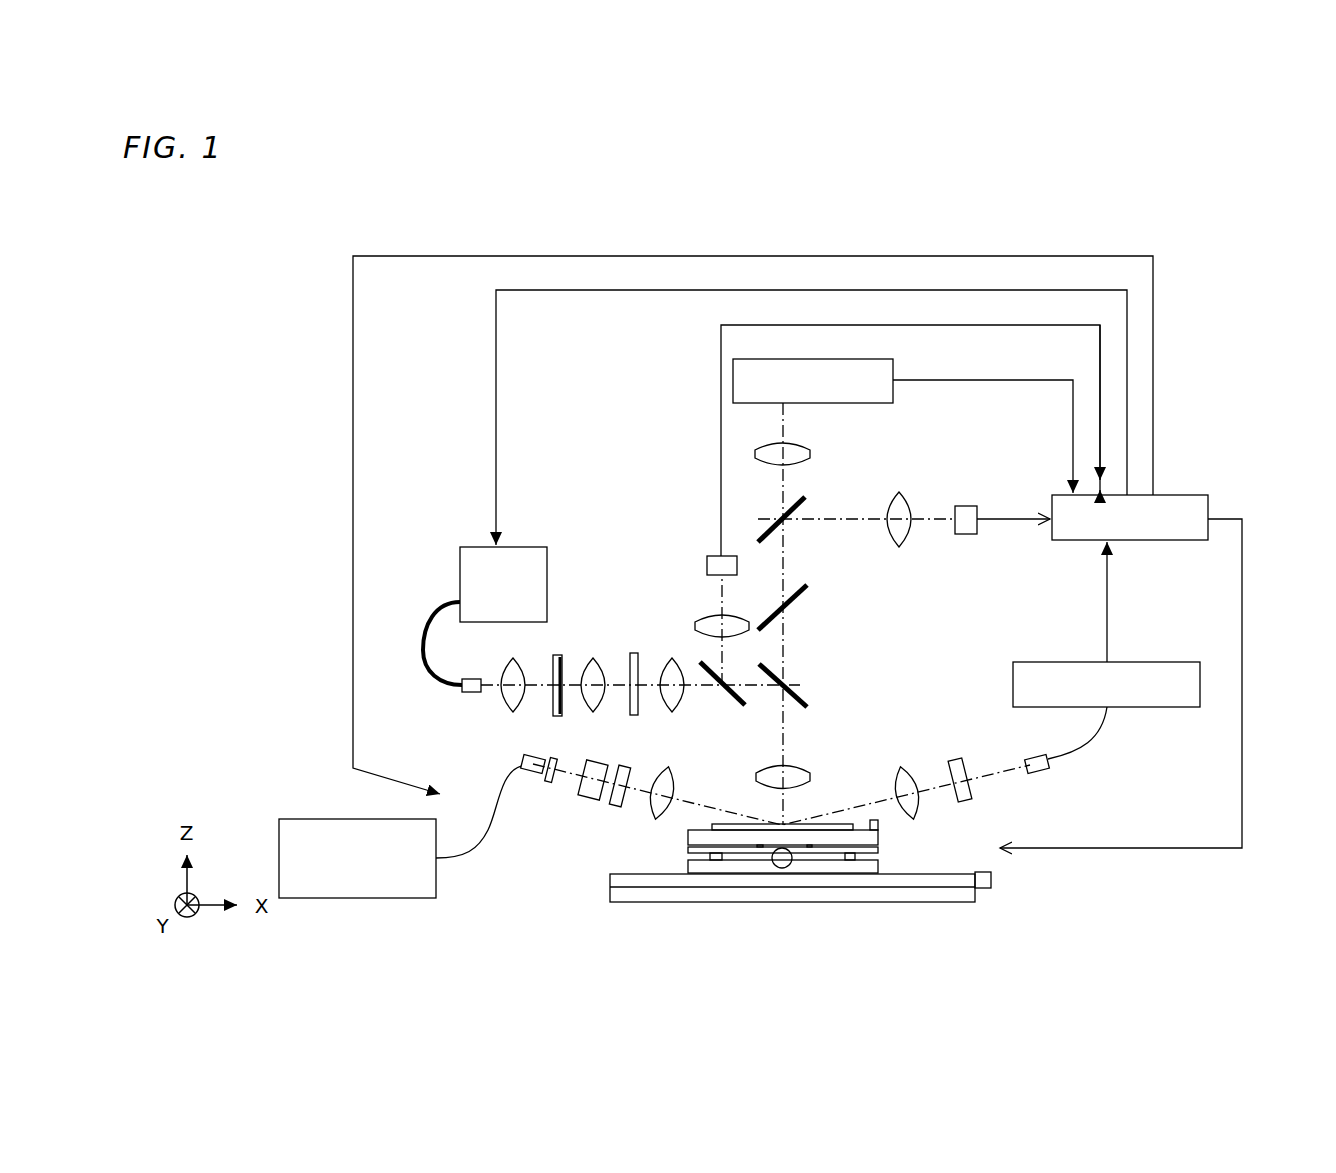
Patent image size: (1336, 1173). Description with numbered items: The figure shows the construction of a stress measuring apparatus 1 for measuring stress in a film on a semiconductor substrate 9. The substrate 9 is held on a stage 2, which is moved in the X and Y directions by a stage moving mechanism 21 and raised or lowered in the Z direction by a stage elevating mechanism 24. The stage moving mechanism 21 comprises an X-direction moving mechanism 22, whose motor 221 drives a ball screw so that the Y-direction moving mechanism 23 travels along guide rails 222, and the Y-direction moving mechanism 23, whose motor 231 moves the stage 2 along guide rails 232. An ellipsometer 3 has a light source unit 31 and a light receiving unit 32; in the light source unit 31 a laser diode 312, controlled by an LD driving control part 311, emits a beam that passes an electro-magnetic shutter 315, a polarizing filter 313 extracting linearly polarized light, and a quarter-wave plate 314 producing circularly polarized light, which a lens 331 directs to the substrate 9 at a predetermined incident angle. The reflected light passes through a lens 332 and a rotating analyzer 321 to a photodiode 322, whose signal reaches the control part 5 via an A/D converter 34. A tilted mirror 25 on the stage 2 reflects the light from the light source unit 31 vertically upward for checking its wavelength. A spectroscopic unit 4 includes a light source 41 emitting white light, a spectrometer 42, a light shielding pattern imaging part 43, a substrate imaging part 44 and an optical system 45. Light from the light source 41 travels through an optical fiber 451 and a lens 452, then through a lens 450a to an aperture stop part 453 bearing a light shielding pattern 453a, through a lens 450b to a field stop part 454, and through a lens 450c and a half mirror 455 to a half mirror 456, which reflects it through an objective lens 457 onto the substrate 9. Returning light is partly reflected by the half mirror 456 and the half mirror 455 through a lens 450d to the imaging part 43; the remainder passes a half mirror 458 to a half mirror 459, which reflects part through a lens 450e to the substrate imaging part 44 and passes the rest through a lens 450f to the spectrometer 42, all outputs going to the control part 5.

The stress measuring apparatus 1 is at (288, 283).
The stage 2 is at (703, 830).
The ellipsometer 3 is at (350, 802).
The spectroscopic unit 4 is at (668, 462).
The control part 5 is at (1208, 505).
The semiconductor substrate 9 is at (735, 824).
The stage moving mechanism 21 is at (805, 860).
The X-direction moving mechanism 22 is at (782, 911).
The Y-direction moving mechanism 23 is at (887, 857).
The stage elevating mechanism 24 is at (720, 850).
The mirror 25 is at (873, 820).
The light source unit 31 is at (492, 890).
The light receiving unit 32 is at (1003, 803).
The A/D converter 34 is at (1160, 707).
The light source 41 is at (475, 547).
The spectrometer 42 is at (790, 359).
The light shielding pattern imaging part 43 is at (715, 556).
The substrate imaging part 44 is at (970, 506).
The optical system 45 is at (627, 553).
The motor 221 is at (980, 888).
The guide rails 222 is at (948, 880).
The motor 231 is at (778, 865).
The guide rails 232 is at (716, 860).
The LD driving control part 311 is at (350, 898).
The laser diode 312 is at (531, 773).
The polarizing filter 313 is at (592, 798).
The quarter-wave plate 314 is at (616, 806).
The electro-magnetic shutter 315 is at (552, 780).
The rotating analyzer 321 is at (963, 760).
The photodiode 322 is at (1040, 771).
The lens 331 is at (662, 818).
The lens 332 is at (900, 766).
The lens 450a is at (515, 712).
The lens 450b is at (596, 712).
The lens 450c is at (674, 712).
The lens 450d is at (710, 618).
The lens 450e is at (900, 492).
The lens 450f is at (798, 445).
The optical fiber 451 is at (440, 606).
The lens 452 is at (468, 692).
The aperture stop part 453 is at (556, 657).
The light shielding pattern 453a is at (561, 655).
The field stop part 454 is at (630, 668).
The half mirror 455 is at (736, 708).
The half mirror 456 is at (790, 688).
The objective lens 457 is at (805, 765).
The half mirror 458 is at (790, 590).
The half mirror 459 is at (790, 510).